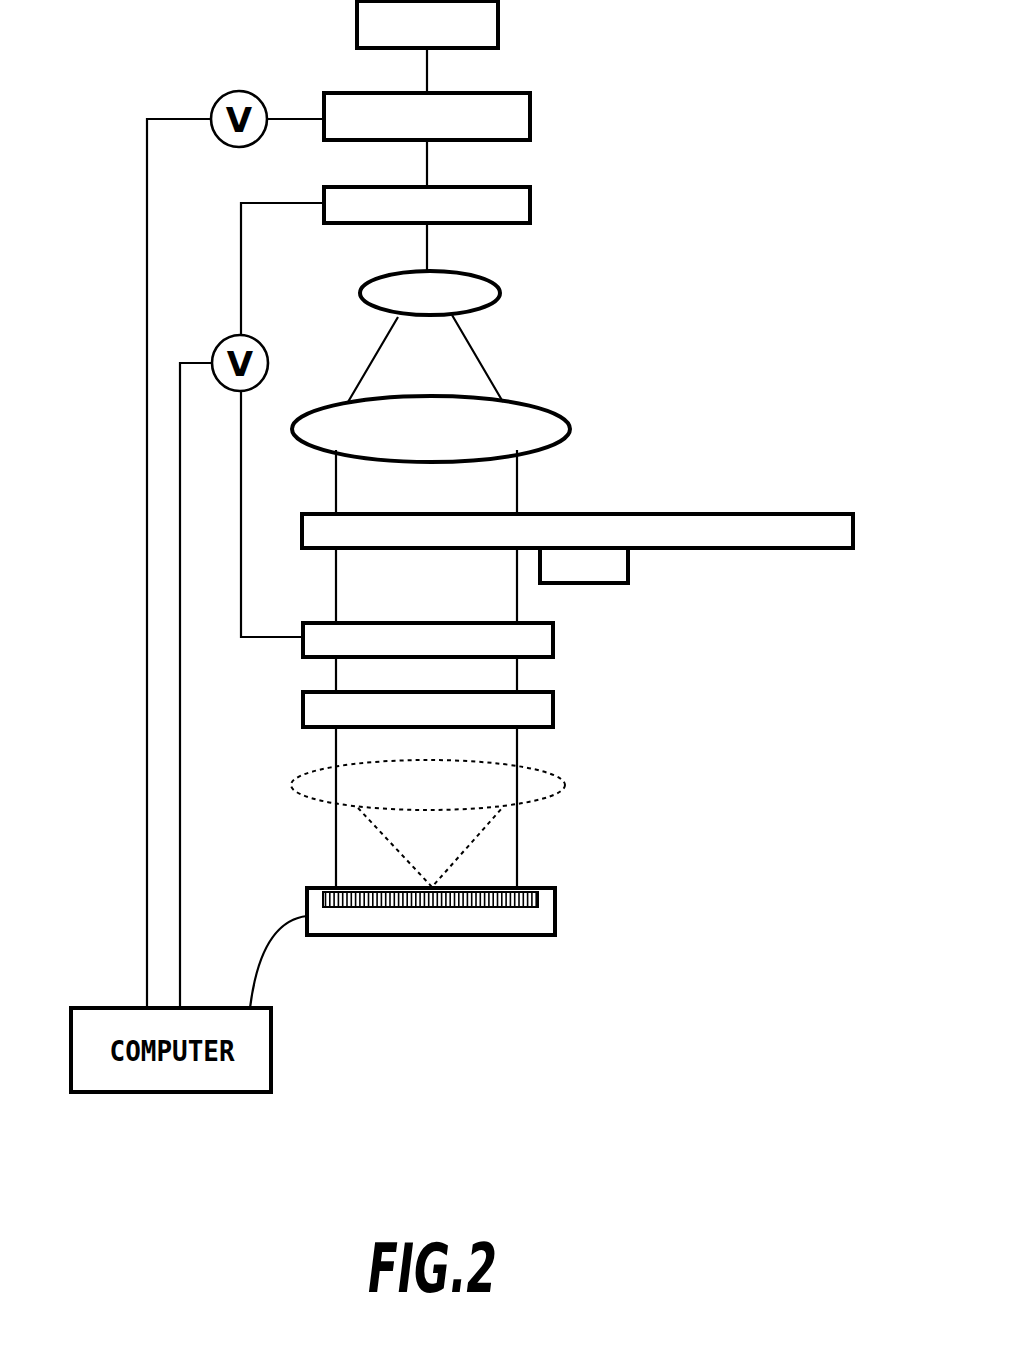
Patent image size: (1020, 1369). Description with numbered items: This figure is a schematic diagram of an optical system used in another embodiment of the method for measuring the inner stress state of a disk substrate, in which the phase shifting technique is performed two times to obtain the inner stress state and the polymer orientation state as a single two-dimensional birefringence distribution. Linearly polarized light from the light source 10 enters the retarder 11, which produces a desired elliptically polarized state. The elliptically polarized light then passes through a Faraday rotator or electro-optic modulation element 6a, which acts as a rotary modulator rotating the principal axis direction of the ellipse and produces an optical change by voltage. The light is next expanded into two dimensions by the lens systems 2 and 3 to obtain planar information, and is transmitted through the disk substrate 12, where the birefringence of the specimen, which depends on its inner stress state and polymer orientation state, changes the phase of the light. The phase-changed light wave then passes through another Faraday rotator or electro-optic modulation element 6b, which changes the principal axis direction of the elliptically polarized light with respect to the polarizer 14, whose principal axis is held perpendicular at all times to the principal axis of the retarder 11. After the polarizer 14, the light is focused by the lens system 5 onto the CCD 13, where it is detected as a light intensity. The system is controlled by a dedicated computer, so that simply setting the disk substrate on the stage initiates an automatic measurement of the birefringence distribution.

The light source 10 is at (498, 18).
The retarder 11 is at (530, 108).
The Faraday rotator or electro-optic modulation element 6a is at (530, 197).
The lens system 2 is at (497, 283).
The lens system 3 is at (545, 405).
The disk substrate 12 is at (714, 512).
The Faraday rotator or electro-optic modulation element 6b is at (553, 632).
The polarizer 14 is at (553, 705).
The lens system 5 is at (535, 770).
The CCD 13 is at (555, 900).